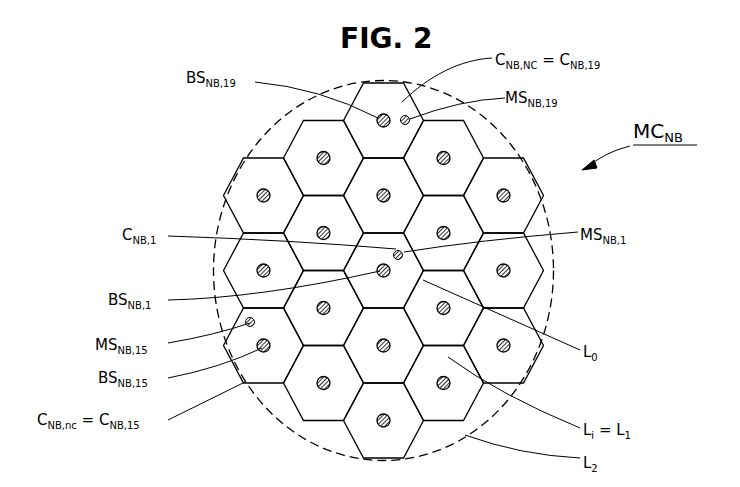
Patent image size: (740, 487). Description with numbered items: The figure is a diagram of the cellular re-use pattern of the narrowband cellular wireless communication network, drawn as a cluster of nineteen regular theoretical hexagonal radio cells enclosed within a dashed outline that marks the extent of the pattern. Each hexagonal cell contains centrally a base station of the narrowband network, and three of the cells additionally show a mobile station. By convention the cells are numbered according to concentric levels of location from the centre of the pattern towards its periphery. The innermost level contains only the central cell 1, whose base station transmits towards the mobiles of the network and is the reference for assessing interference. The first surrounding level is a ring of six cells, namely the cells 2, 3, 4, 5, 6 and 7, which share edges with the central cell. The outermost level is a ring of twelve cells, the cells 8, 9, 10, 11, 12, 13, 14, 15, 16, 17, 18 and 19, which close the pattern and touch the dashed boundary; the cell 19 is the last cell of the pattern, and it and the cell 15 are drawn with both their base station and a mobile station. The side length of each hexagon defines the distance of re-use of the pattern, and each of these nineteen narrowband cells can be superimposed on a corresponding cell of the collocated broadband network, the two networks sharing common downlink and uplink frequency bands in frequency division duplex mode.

The central cell C_NB 1 is at (384, 270).
The cell C_NB 2 is at (444, 233).
The cell C_NB 3 is at (444, 308).
The cell C_NB 4 is at (384, 345).
The cell C_NB 5 is at (324, 308).
The cell C_NB 6 is at (324, 233).
The cell C_NB 7 is at (384, 195).
The cell C_NB 8 is at (444, 158).
The cell C_NB 9 is at (504, 195).
The cell C_NB 10 is at (504, 270).
The cell C_NB 11 is at (504, 345).
The cell C_NB 12 is at (444, 383).
The cell C_NB 13 is at (384, 420).
The cell C_NB 14 is at (324, 383).
The cell C_NB 15 is at (264, 345).
The cell C_NB 16 is at (264, 270).
The cell C_NB 17 is at (264, 195).
The cell C_NB 18 is at (324, 158).
The cell C_NB,19 (C_NB,NC) 19 is at (384, 120).